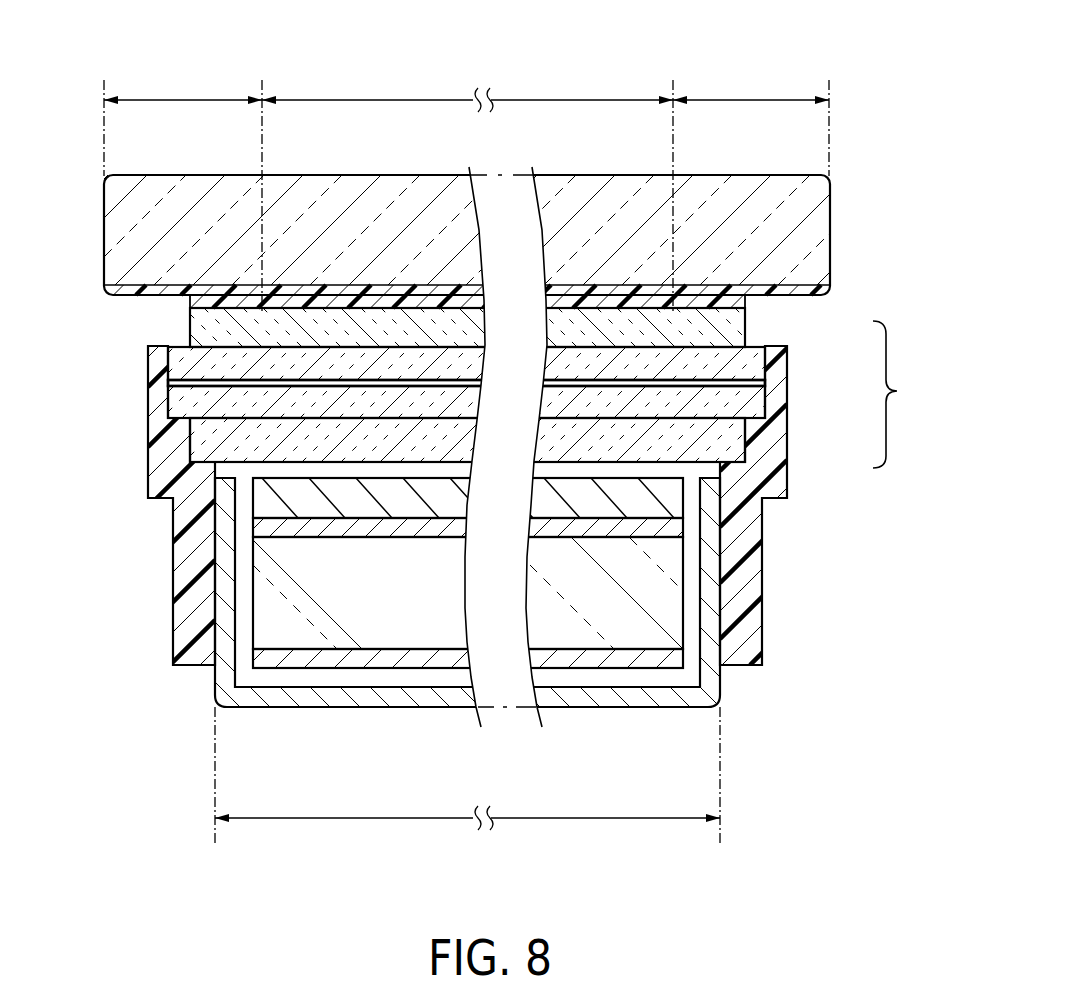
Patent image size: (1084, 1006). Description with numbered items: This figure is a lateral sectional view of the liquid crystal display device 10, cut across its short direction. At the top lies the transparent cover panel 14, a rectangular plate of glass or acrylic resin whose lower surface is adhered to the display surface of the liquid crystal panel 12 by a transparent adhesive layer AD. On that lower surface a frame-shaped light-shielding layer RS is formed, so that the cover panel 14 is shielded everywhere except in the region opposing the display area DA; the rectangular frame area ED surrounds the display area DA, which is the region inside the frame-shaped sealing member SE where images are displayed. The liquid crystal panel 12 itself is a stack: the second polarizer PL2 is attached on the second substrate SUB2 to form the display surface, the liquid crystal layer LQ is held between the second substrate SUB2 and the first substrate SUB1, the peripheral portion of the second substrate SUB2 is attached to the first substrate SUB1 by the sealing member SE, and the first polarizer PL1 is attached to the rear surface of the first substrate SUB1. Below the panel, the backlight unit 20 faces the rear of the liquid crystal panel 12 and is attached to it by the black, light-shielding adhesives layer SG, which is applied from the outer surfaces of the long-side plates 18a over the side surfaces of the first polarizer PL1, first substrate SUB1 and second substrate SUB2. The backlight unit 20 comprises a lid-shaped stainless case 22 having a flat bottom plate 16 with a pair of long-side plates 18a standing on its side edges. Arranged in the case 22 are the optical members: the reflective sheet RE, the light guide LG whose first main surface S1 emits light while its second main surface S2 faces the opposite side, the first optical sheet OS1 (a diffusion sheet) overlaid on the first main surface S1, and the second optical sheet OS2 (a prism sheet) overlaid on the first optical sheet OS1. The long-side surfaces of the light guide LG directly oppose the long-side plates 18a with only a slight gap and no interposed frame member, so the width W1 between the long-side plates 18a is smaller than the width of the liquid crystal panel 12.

The liquid crystal display device 10 is at (614, 78).
The cover panel 14 is at (300, 185).
The adhesive layer AD is at (350, 300).
The sealing member SE is at (199, 382).
The frame area ED is at (466, 189).
The display area DA is at (467, 89).
The light-shielding layer RS is at (132, 297).
The second polarizer PL2 is at (725, 332).
The second substrate SUB2 is at (735, 364).
The first substrate SUB1 is at (735, 395).
The liquid crystal layer LQ is at (660, 386).
The first polarizer PL1 is at (712, 446).
The liquid crystal panel 12 is at (900, 394).
The second optical sheet OS2 is at (266, 503).
The first optical sheet OS1 is at (272, 527).
The adhesives layer SG is at (184, 556).
The long-side plate 18a is at (226, 612).
The reflective sheet RE is at (322, 660).
The light guide LG is at (368, 638).
The first main surface S1 is at (568, 531).
The second main surface S2 is at (590, 652).
The bottom plate 16 is at (642, 706).
The backlight unit 20 is at (272, 712).
The case 22 is at (408, 712).
The width between the long-side plates W1 is at (467, 780).